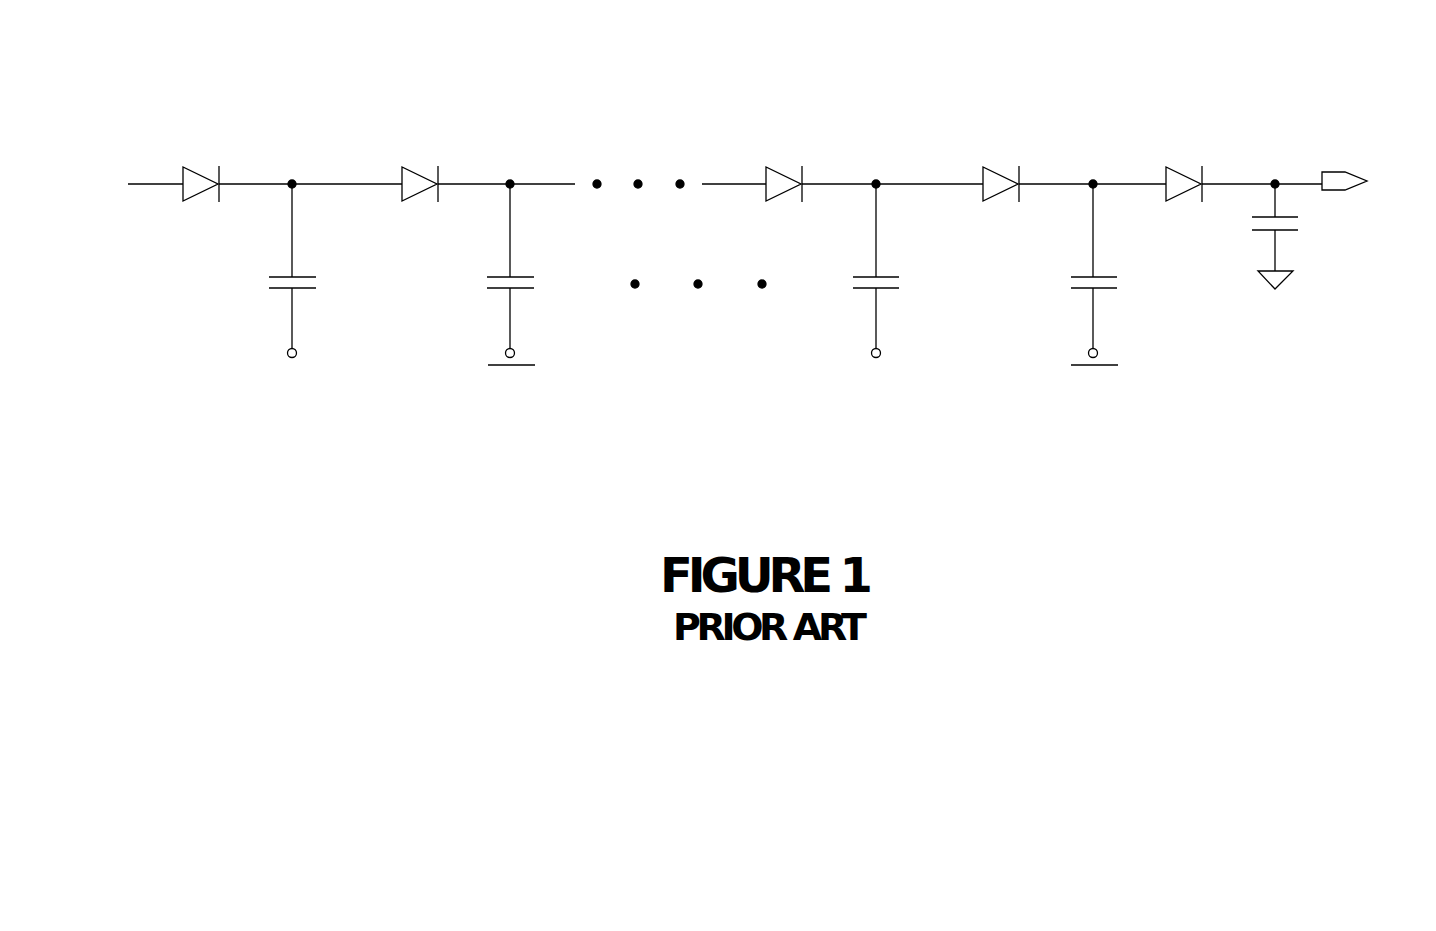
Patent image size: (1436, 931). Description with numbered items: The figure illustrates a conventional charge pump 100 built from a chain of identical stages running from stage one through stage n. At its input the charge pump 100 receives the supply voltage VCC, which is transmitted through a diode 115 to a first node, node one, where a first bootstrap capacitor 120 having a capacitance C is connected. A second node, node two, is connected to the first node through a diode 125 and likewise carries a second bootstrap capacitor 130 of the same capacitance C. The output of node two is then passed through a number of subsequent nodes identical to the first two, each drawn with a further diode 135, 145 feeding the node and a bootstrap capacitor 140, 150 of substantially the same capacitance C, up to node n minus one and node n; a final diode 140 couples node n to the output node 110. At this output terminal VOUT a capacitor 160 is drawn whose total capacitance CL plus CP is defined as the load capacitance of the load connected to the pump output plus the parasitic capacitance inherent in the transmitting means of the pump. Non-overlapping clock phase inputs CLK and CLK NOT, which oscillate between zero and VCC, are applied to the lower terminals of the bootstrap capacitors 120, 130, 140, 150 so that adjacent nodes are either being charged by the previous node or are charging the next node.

The charge pump 100 is at (961, 62).
The output node 110 is at (1302, 182).
The diode 115 is at (202, 214).
The first bootstrap capacitor 120 is at (322, 316).
The diode 125 is at (420, 214).
The second bootstrap capacitor 130 is at (540, 315).
The diode 135 is at (785, 214).
The capacitor / diode 140 is at (905, 315).
The diode 145 is at (1003, 214).
The capacitor 150 is at (1125, 312).
The capacitor 160 is at (1304, 251).